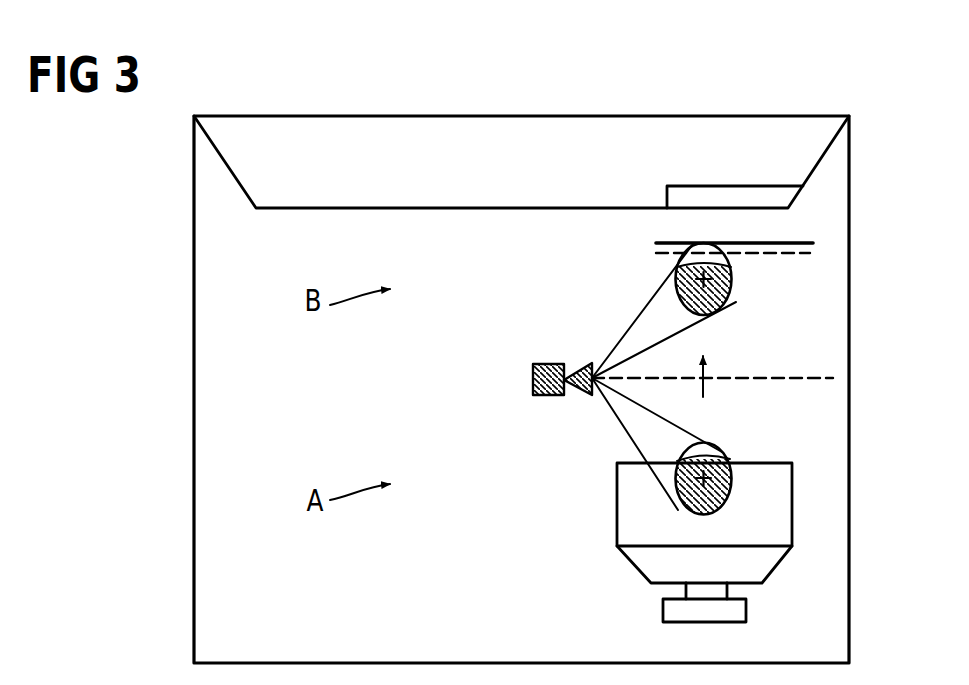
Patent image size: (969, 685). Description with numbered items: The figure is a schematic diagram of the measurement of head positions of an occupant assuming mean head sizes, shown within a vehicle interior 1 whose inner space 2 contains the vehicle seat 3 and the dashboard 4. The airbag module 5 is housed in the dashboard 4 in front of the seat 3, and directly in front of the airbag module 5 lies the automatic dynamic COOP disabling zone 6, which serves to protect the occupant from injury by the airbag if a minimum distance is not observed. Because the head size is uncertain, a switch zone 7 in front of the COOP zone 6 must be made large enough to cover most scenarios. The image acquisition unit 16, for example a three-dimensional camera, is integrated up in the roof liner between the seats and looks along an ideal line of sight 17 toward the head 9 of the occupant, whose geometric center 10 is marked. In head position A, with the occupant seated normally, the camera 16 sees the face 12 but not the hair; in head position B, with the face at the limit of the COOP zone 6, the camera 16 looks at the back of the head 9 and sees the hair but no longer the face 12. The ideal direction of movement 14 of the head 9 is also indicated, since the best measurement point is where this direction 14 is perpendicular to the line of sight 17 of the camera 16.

The x-ray apparatus housing 1 is at (520, 103).
The housing interior 2 is at (487, 591).
The vehicle seat 3 is at (630, 512).
The dashboard 4 is at (496, 195).
The airbag module 5 is at (707, 198).
The COOP disabling zone 6 is at (813, 243).
The switch zone 7 is at (811, 253).
The head 9 is at (733, 281).
The geometric center 10 is at (676, 277).
The face 12 is at (715, 456).
The ideal direction of movement 14 is at (706, 381).
The image acquisition unit 16 is at (533, 385).
The ideal line of sight 17 is at (798, 378).